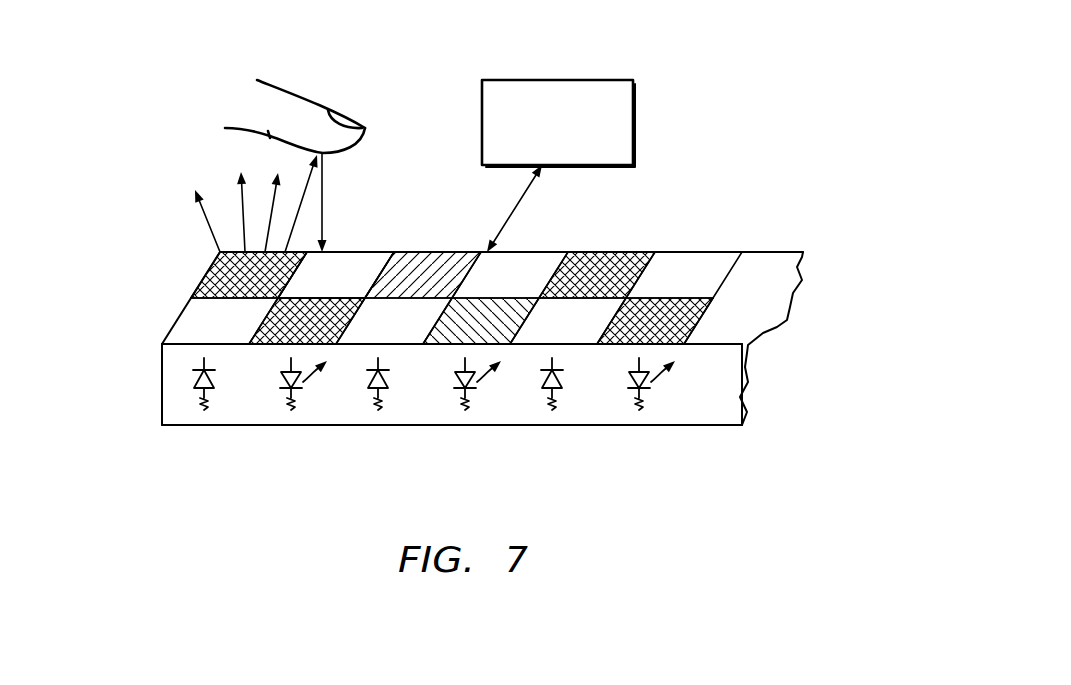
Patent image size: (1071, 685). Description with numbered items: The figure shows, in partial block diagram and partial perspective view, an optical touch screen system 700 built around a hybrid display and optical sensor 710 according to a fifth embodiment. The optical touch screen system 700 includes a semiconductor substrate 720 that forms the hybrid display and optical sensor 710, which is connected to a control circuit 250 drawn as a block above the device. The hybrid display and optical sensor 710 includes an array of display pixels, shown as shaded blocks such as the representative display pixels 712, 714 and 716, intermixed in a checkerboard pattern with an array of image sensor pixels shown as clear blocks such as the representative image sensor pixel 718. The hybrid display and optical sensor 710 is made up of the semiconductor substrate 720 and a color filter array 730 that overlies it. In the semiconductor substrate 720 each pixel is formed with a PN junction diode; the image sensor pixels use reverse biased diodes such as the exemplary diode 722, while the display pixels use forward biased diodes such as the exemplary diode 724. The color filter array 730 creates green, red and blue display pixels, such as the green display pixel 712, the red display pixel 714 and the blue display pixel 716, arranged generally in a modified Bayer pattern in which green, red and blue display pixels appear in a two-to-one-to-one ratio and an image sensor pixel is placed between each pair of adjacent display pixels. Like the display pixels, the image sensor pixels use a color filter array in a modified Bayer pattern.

The optical touch screen system 700 is at (170, 38).
The hybrid display and optical sensor 710 is at (102, 246).
The green display pixel 712 is at (227, 267).
The red display pixel 714 is at (433, 257).
The blue display pixel 716 is at (498, 299).
The image sensor pixel 718 is at (352, 260).
The semiconductor substrate 720 is at (160, 370).
The reverse biased diode 722 is at (194, 380).
The forward biased diode 724 is at (281, 382).
The color filter array 730 is at (180, 315).
The control circuit 250 is at (635, 127).